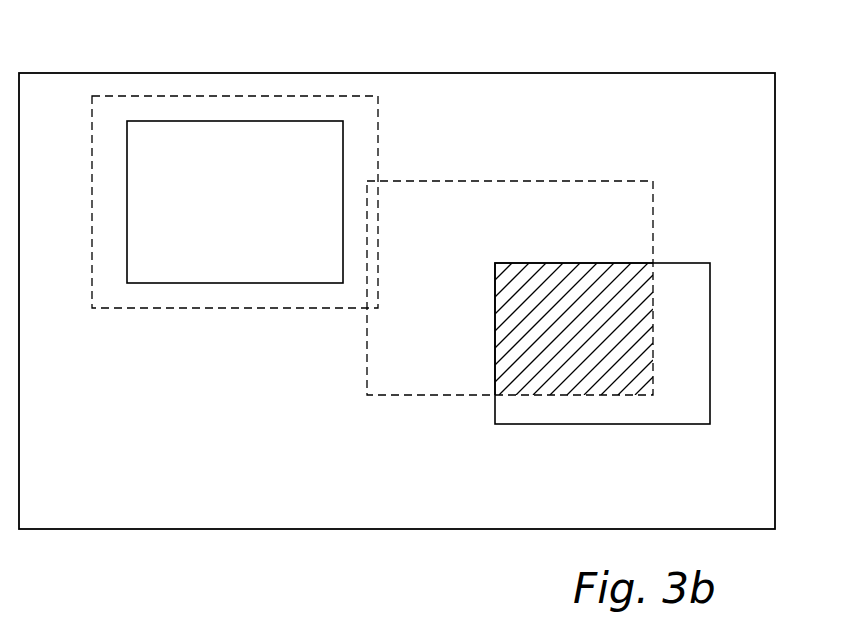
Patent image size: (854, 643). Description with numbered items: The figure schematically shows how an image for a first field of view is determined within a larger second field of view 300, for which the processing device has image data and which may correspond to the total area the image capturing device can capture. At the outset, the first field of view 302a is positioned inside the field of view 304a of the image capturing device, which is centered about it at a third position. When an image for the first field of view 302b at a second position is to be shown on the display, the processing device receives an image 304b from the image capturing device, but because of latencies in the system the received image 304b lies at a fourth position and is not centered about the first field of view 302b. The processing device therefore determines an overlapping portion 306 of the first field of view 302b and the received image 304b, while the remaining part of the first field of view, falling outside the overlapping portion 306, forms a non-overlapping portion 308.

The second field of view 300 is at (598, 73).
The first field of view 302a is at (203, 121).
The first field of view 302b is at (532, 263).
The field of view of the image capturing device 304a is at (378, 140).
The received image 304b is at (625, 181).
The overlapping portion 306 is at (537, 343).
The non-overlapping portion 308 is at (675, 400).